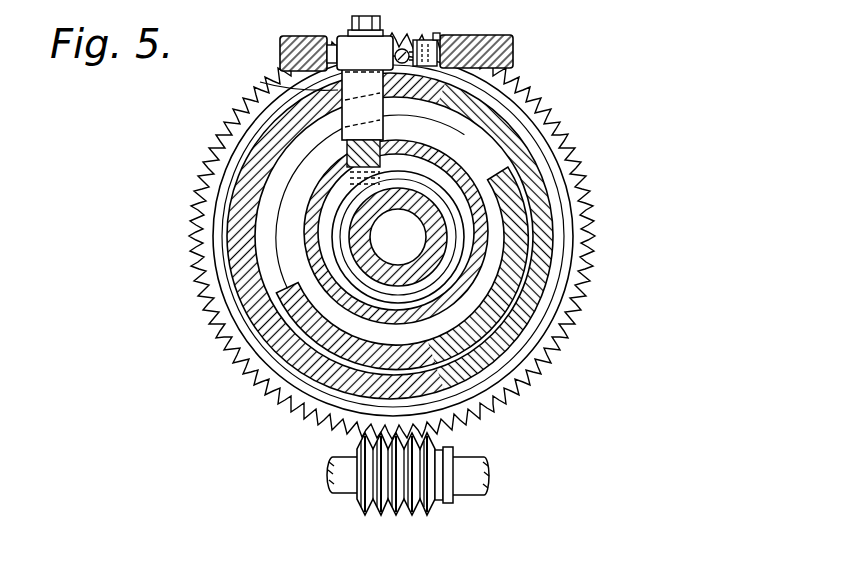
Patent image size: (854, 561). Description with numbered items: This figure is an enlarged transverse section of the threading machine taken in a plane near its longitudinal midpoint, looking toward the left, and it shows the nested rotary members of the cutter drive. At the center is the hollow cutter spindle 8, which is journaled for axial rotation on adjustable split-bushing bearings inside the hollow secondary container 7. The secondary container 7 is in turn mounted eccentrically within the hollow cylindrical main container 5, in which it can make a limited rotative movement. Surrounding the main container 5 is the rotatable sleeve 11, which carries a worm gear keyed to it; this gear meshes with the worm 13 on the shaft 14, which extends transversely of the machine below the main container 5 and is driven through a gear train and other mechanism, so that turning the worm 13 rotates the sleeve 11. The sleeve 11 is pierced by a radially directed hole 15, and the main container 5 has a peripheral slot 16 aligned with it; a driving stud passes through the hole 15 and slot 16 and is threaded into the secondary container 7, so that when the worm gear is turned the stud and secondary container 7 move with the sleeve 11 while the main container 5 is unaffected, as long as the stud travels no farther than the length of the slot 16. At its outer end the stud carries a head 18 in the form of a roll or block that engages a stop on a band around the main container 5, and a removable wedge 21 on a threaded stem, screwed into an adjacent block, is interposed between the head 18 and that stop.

The main container 5 is at (397, 358).
The secondary container 7 is at (329, 282).
The cutter spindle 8 is at (418, 218).
The rotatable sleeve 11 is at (507, 347).
The worm 13 is at (400, 514).
The shaft 14 is at (337, 463).
The radially directed hole 15 is at (260, 82).
The peripheral slot 16 is at (268, 204).
The head 18 is at (358, 56).
The removable wedge 21 is at (405, 40).